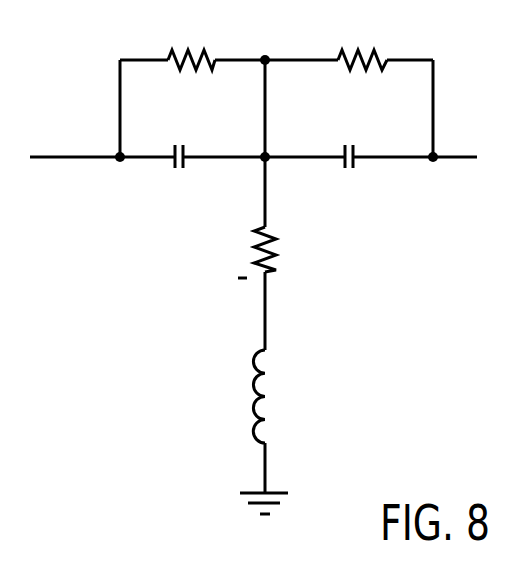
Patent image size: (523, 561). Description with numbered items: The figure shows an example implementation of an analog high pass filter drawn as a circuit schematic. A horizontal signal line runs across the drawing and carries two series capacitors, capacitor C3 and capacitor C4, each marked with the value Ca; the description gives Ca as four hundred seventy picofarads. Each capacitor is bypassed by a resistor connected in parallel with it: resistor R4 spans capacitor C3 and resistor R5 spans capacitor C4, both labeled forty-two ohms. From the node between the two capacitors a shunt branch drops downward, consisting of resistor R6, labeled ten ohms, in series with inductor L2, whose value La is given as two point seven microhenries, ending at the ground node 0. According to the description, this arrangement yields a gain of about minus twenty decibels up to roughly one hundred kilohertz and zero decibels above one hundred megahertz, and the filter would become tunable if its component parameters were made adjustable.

The resistor R4 (42R) R4 is at (191, 61).
The resistor R5 (42R) R5 is at (362, 61).
The resistor R6 (10R) R6 is at (293, 254).
The capacitor C3 ({Ca}) C3 is at (195, 158).
The capacitor C4 ({Ca}) C4 is at (367, 158).
The inductor L2 ({La}) L2 is at (288, 395).
The ground node 0 is at (266, 513).